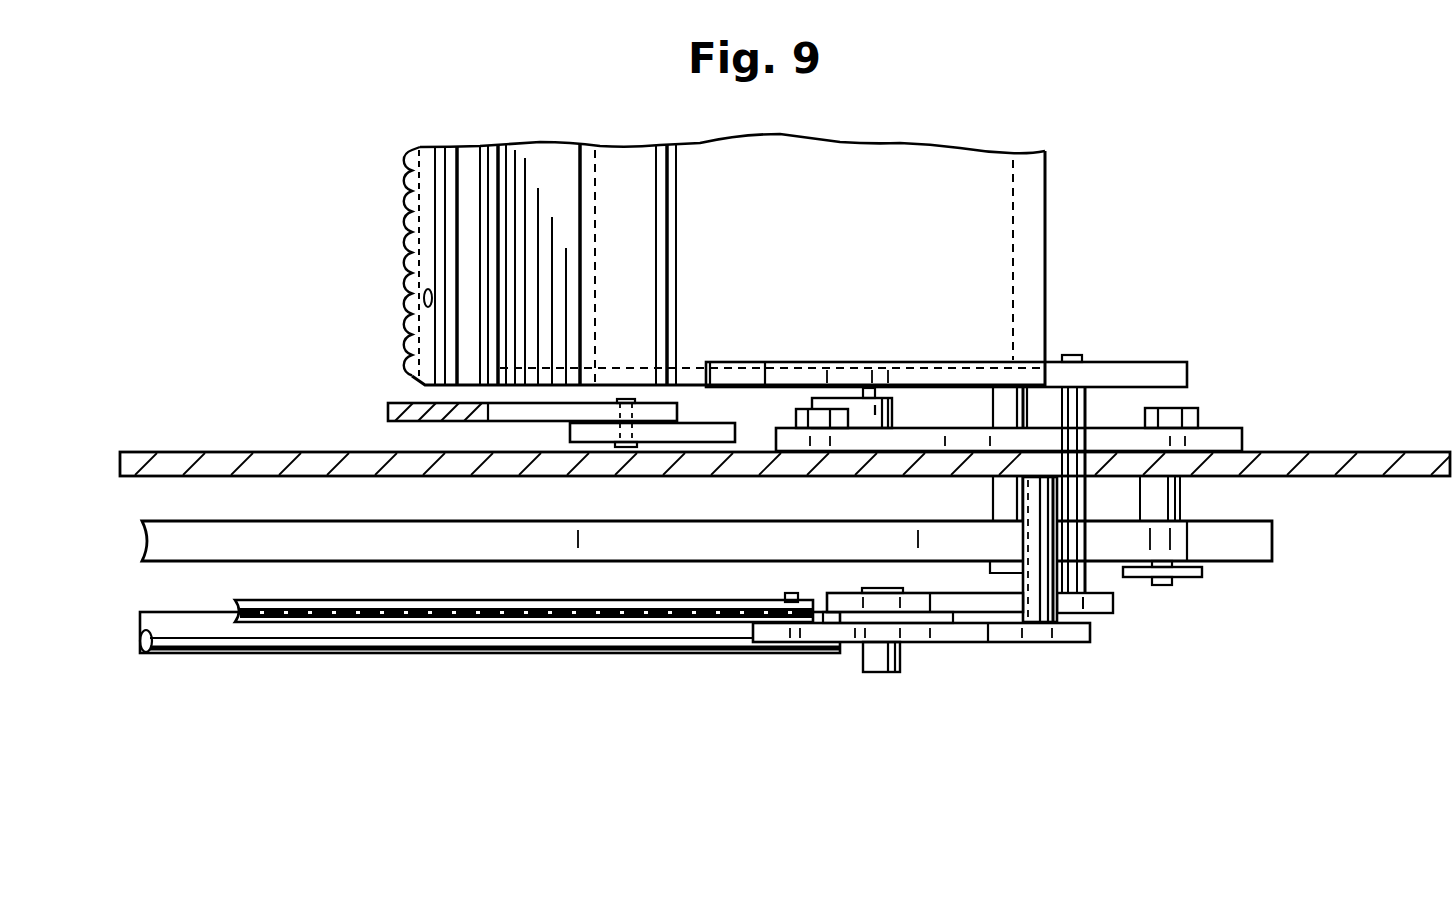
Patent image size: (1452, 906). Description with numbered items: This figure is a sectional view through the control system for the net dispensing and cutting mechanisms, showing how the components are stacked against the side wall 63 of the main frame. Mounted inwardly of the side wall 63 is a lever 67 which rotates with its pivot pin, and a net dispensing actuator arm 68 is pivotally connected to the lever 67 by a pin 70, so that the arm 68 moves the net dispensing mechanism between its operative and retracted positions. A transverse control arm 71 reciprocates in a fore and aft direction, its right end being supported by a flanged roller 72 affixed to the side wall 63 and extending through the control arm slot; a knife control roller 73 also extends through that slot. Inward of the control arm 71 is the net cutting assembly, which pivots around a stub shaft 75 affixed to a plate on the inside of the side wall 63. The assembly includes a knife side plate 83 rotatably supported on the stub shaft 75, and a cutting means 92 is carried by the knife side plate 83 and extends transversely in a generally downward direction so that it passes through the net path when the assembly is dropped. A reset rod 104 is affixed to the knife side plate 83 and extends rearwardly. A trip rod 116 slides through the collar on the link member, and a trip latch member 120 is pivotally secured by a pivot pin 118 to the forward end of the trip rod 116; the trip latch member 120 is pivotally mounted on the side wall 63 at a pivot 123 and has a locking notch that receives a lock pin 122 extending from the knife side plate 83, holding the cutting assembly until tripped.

The cutting means 92 is at (375, 248).
The knife side plate 83 is at (1127, 363).
The lever 67 is at (388, 412).
The stub shaft 75 is at (832, 395).
The knife control roller 73 is at (1005, 410).
The side wall 63 is at (1310, 450).
The pin 70 is at (628, 448).
The net dispensing actuator arm 68 is at (688, 435).
The transverse control arm 71 is at (410, 521).
The trip rod 116 is at (420, 602).
The pivot pin 118 is at (790, 593).
The pivot 123 is at (1033, 587).
The flanged roller 72 is at (1165, 580).
The reset rod 104 is at (478, 648).
The lock pin 122 is at (880, 672).
The trip latch member 120 is at (990, 642).